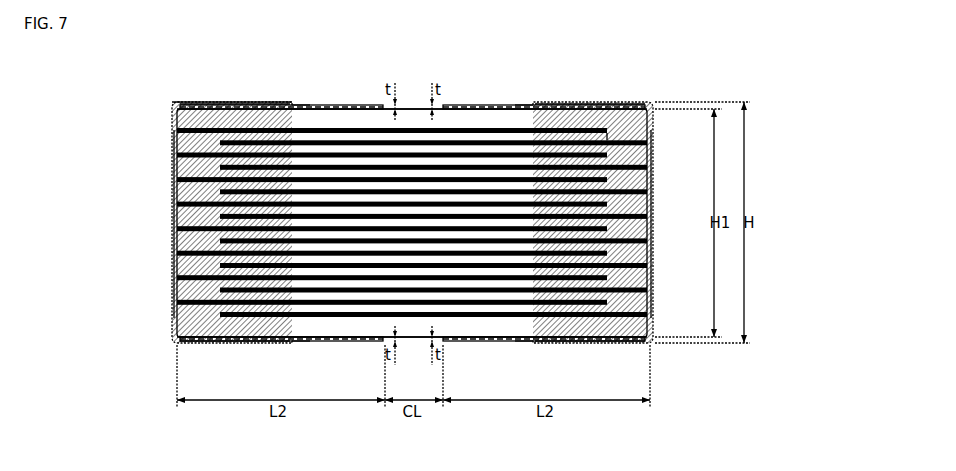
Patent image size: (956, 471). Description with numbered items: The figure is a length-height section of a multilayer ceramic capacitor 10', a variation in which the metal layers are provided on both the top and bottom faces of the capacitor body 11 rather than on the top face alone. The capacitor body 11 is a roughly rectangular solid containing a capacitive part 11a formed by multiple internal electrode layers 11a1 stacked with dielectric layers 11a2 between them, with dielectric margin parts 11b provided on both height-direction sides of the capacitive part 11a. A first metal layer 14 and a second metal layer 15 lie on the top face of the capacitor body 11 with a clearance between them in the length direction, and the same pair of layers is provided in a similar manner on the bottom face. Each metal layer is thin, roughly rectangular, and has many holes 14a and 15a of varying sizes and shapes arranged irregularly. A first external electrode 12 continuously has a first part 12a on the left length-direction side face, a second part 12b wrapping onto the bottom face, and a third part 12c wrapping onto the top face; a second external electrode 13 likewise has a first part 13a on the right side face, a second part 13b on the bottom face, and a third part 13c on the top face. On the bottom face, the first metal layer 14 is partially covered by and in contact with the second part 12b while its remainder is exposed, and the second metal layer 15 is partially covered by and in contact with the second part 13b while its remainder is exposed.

The multilayer ceramic capacitor 10' is at (227, 77).
The capacitor body 11 is at (408, 108).
The capacitive part 11a is at (172, 130).
The internal electrode layers 11a1 is at (608, 128).
The dielectric layers 11a2 is at (610, 137).
The dielectric margin parts 11b is at (172, 113).
The first external electrode 12 is at (172, 194).
The first part 12a is at (172, 271).
The second part 12b is at (231, 343).
The third part 12c is at (229, 104).
The second external electrode 13 is at (654, 192).
The first part 13a is at (654, 270).
The second part 13b is at (590, 343).
The third part 13c is at (590, 102).
The first metal layer 14 is at (347, 105).
The holes 14a is at (305, 105).
The second metal layer 15 is at (475, 105).
The holes 15a is at (515, 105).